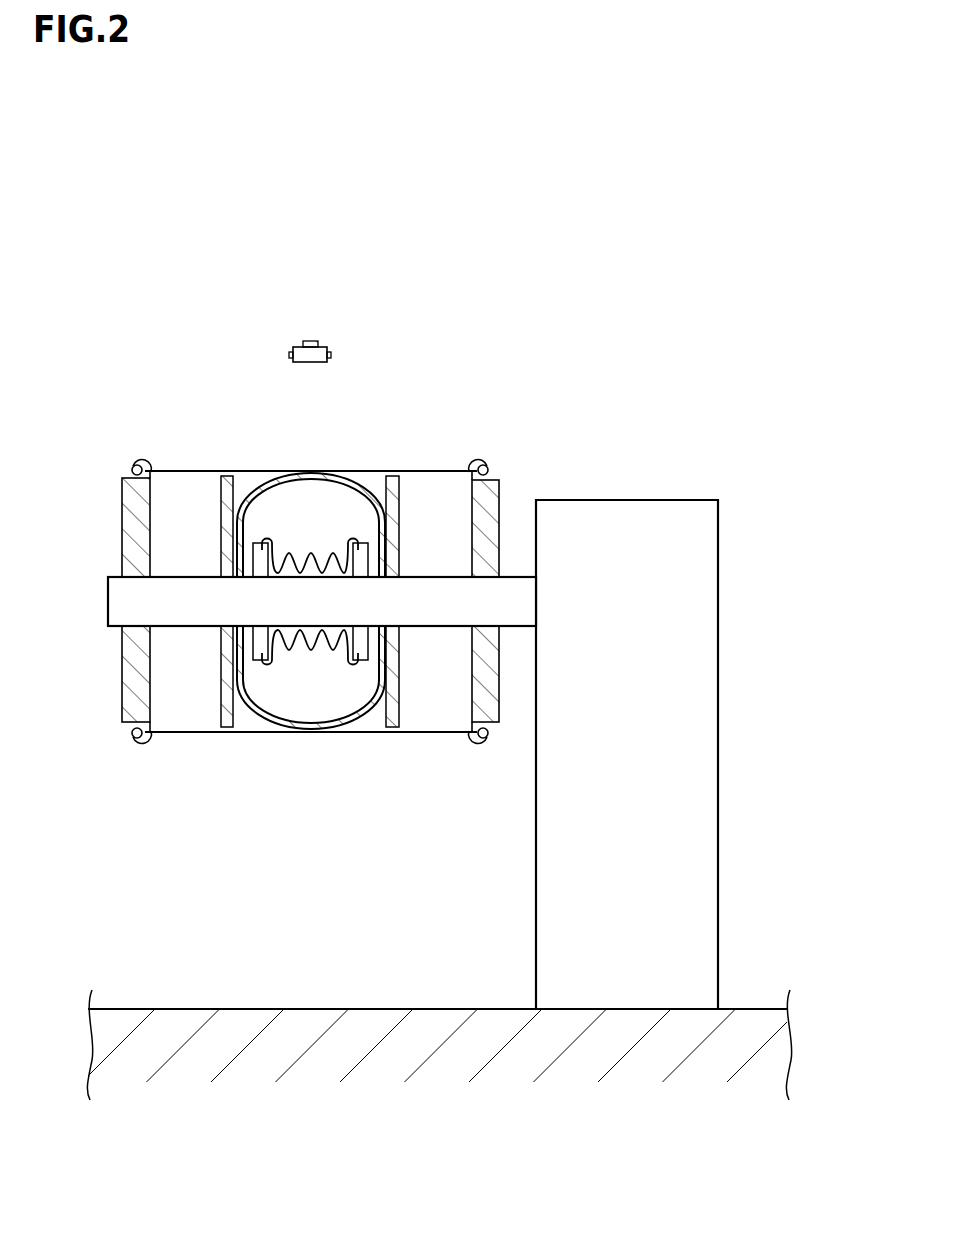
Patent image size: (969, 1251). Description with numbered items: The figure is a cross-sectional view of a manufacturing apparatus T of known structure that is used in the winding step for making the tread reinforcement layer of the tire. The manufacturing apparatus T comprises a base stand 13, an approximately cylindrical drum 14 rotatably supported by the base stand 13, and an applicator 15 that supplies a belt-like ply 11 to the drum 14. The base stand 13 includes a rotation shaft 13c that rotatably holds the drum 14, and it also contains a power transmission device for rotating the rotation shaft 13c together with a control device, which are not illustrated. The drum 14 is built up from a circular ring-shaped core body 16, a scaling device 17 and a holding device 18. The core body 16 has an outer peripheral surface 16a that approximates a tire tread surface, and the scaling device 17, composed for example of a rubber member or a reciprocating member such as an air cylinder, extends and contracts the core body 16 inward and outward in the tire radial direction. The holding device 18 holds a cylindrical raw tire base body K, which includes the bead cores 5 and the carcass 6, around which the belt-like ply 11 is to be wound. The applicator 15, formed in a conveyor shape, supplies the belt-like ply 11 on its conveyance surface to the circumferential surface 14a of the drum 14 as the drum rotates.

The bead core 5 is at (133, 466).
The carcass 6 is at (178, 470).
The raw tire base body K is at (103, 376).
The belt-like ply 11 is at (310, 340).
The base stand 13 is at (633, 525).
The rotation shaft 13c is at (517, 627).
The drum 14 is at (612, 313).
The circumferential surface 14a is at (255, 499).
The outer peripheral surface 16a is at (257, 492).
The applicator 15 is at (332, 340).
The core body 16 is at (332, 474).
The scaling device 17 is at (332, 552).
The holding device 18 is at (500, 480).
The manufacturing apparatus T is at (415, 266).